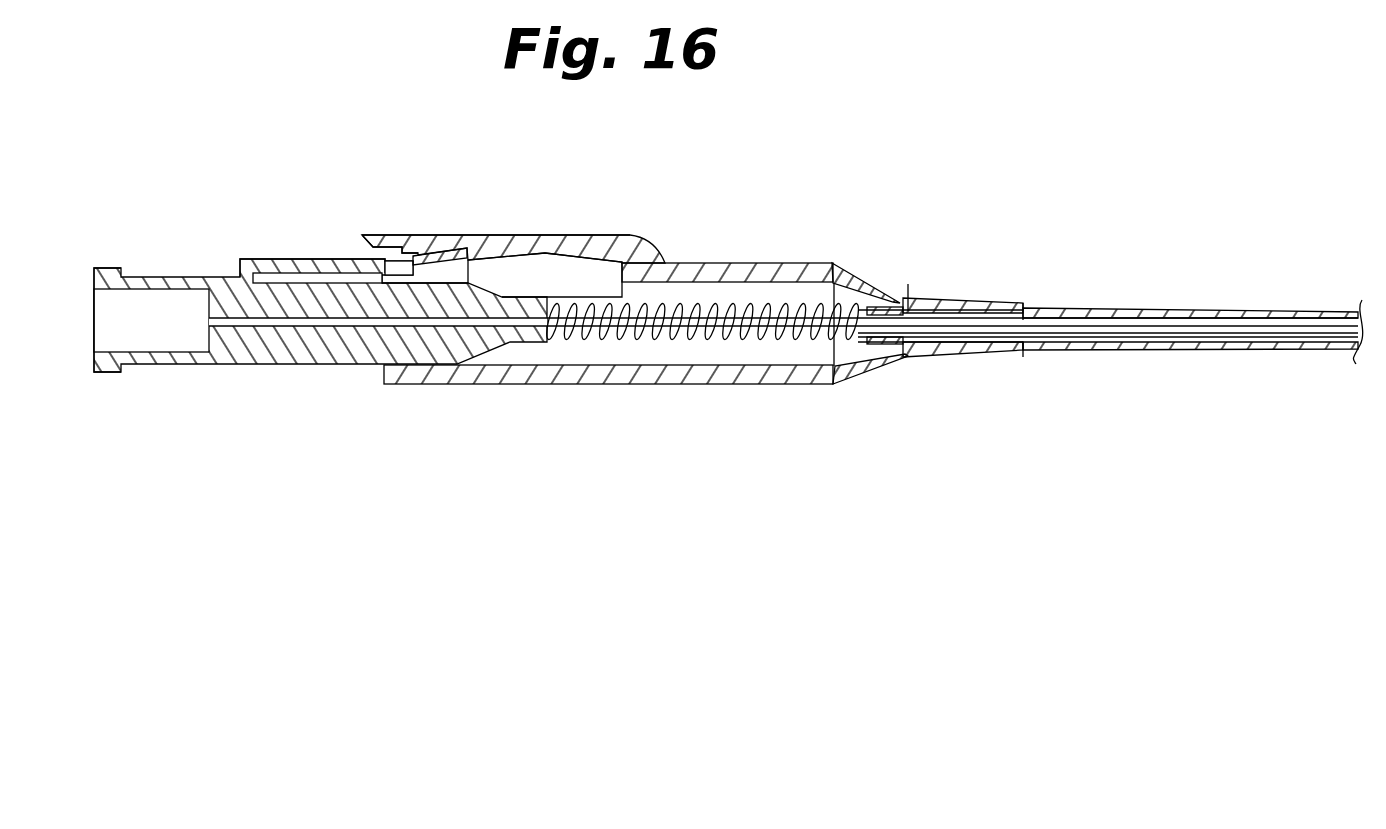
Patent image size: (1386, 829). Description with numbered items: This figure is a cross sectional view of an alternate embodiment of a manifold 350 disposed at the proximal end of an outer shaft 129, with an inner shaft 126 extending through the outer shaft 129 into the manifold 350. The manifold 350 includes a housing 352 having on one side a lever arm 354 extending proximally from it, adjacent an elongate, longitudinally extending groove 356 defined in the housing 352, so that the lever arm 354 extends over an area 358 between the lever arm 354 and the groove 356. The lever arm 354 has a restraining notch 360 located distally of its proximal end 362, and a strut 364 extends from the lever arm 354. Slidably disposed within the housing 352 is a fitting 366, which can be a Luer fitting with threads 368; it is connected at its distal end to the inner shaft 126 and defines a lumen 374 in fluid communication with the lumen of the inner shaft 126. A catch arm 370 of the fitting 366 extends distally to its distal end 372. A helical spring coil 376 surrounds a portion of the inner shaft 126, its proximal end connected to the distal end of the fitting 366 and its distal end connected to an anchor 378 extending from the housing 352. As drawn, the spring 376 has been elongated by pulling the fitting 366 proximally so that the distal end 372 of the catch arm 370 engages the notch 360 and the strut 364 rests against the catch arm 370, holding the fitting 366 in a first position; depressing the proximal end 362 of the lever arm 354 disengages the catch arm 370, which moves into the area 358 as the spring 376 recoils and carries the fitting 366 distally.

The manifold 350 is at (713, 218).
The housing 352 is at (730, 372).
The lever arm 354 is at (533, 240).
The groove 356 is at (668, 262).
The area 358 is at (592, 273).
The restraining notch 360 is at (480, 240).
The proximal end 362 is at (365, 233).
The strut 364 is at (410, 253).
The fitting 366 is at (167, 278).
The threads 368 is at (95, 268).
The catch arm 370 is at (290, 262).
The distal end 372 is at (467, 250).
The inner lumen 374 is at (262, 318).
The helical spring coil 376 is at (820, 283).
The anchor 378 is at (884, 340).
The outer shaft 129 is at (1152, 310).
The inner shaft 126 is at (1238, 330).